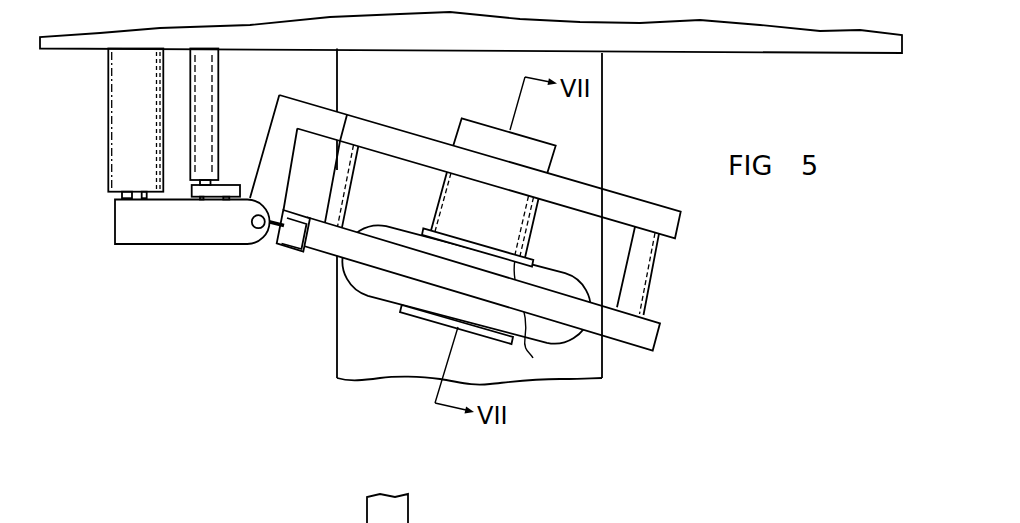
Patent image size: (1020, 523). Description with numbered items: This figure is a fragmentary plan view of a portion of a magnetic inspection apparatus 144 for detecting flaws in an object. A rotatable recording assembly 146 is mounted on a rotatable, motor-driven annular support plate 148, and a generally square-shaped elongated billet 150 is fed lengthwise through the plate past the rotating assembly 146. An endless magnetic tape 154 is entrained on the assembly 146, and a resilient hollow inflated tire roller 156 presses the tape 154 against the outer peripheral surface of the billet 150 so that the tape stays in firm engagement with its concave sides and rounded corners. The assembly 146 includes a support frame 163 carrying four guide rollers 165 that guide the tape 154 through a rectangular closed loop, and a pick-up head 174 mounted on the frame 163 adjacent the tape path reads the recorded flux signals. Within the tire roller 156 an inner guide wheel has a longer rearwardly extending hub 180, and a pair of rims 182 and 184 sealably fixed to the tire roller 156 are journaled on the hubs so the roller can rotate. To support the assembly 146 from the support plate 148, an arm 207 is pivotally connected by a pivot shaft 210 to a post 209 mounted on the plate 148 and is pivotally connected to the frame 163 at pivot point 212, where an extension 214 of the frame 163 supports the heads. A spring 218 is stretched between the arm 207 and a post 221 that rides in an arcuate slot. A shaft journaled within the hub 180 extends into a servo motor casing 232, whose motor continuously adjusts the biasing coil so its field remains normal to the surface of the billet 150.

The magnetic inspection apparatus 144 is at (217, 334).
The rotatable recording assembly 146 is at (643, 368).
The annular support plate 148 is at (752, 40).
The billet 150 is at (573, 368).
The magnetic tape 154 is at (370, 258).
The tire roller 156 is at (383, 285).
The support frame 163 is at (318, 122).
The guide rollers 165 is at (353, 132).
The pick-up head 174 is at (297, 233).
The rearwardly extending hub 180 is at (540, 215).
The rim 182 is at (428, 313).
The rim 184 is at (532, 358).
The arm 207 is at (128, 220).
The post 209 is at (122, 158).
The pivot shaft 210 is at (132, 193).
The pivot point 212 is at (253, 230).
The extension 214 is at (272, 232).
The spring 218 is at (218, 193).
The post 221 is at (211, 65).
The servo motor casing 232 is at (518, 148).